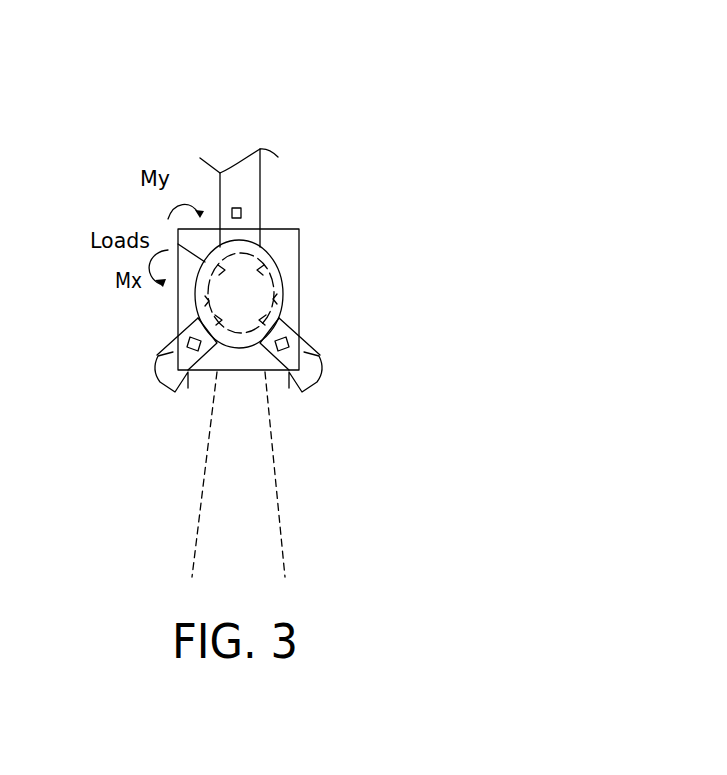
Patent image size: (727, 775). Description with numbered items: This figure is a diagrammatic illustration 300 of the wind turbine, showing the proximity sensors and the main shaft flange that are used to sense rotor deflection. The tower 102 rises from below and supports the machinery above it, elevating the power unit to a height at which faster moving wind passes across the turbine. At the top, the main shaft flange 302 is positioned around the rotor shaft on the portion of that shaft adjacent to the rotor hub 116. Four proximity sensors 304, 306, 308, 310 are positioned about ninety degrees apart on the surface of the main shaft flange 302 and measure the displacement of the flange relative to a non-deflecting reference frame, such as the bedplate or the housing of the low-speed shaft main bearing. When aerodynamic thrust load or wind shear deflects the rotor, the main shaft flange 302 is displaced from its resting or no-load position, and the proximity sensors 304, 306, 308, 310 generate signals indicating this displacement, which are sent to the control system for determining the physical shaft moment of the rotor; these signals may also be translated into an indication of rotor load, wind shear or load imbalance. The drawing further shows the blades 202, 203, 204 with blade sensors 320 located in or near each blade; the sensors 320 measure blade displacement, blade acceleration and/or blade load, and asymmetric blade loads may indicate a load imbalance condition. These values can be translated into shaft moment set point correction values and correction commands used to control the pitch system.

The gimbal assembly 300 is at (362, 126).
The blade 204 is at (256, 190).
The main shaft flange 302 is at (248, 241).
The proximity sensor 304 is at (208, 304).
The rotor hub 116 is at (178, 244).
The proximity sensor 306 is at (200, 298).
The proximity sensor 308 is at (260, 270).
The proximity sensor 310 is at (268, 314).
The blade sensor 320 is at (242, 212).
The blade 202 is at (183, 388).
The blade 203 is at (309, 347).
The tower 102 is at (272, 506).